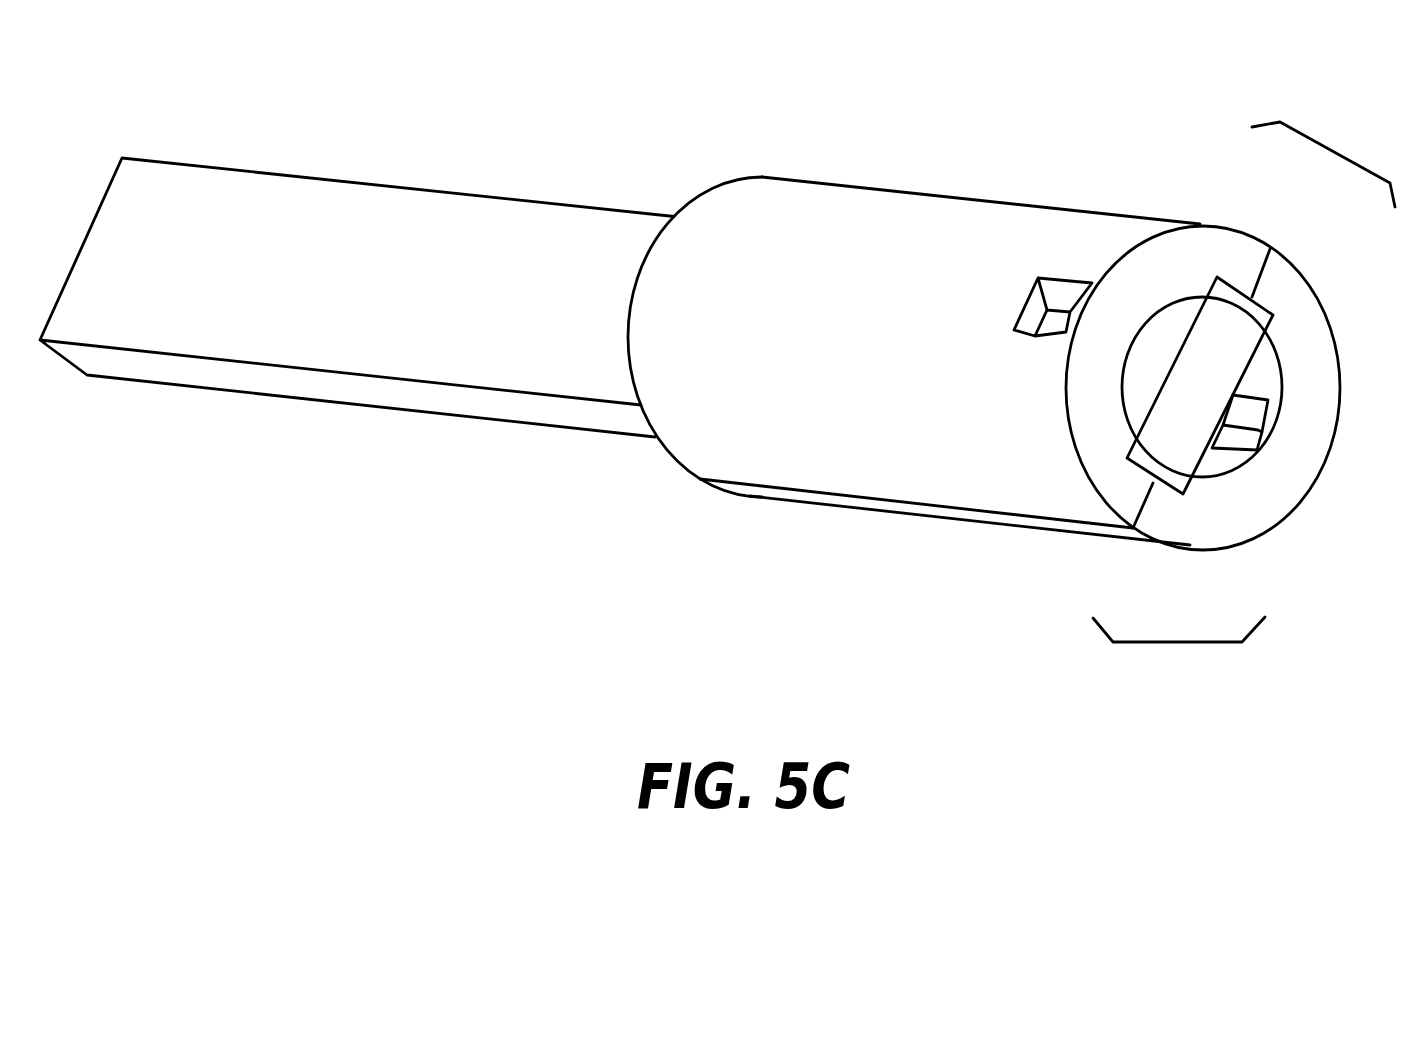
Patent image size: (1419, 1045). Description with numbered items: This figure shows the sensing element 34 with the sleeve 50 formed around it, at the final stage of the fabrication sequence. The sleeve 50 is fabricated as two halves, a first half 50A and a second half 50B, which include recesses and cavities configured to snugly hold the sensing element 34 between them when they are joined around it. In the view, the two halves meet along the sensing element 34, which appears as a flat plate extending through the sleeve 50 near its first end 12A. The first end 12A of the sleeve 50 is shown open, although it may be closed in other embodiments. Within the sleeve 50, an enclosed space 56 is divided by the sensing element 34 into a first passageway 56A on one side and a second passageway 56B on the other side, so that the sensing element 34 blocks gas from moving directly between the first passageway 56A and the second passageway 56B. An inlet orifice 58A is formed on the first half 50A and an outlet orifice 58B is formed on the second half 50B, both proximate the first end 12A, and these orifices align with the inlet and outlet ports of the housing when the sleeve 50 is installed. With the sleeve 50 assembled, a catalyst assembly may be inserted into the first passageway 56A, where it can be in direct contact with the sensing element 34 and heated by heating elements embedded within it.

The first end of sleeve 12A is at (1344, 492).
The sensing element 34 is at (1227, 372).
The sleeve 50 is at (1335, 150).
The first half 50A is at (1238, 252).
The second half 50B is at (1270, 290).
The enclosed space 56 is at (1172, 643).
The first passageway 56A is at (1145, 402).
The second passageway 56B is at (1213, 460).
The inlet orifice 58A is at (1040, 310).
The outlet orifice 58B is at (1240, 432).